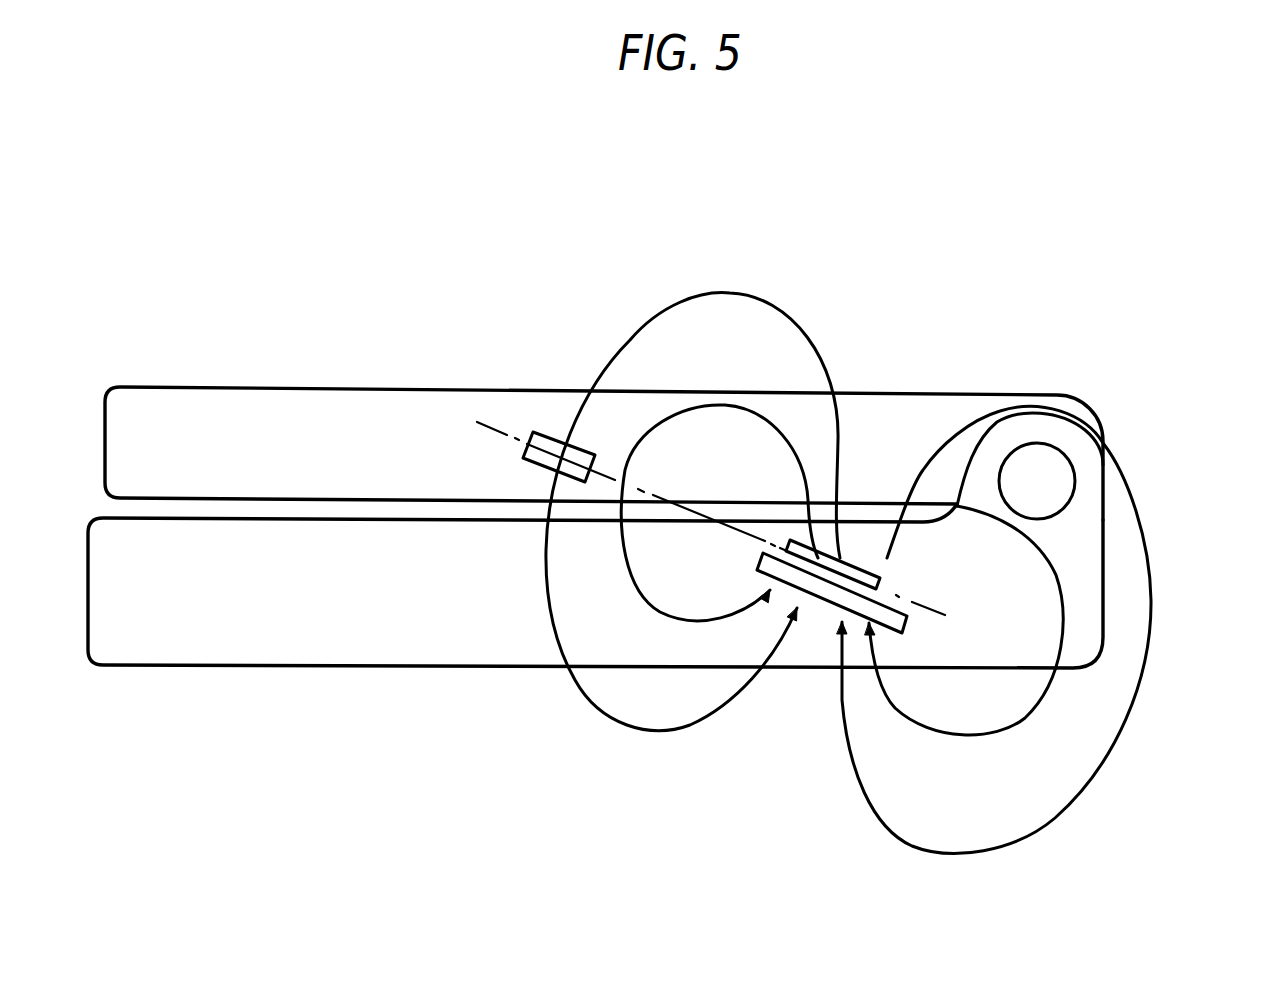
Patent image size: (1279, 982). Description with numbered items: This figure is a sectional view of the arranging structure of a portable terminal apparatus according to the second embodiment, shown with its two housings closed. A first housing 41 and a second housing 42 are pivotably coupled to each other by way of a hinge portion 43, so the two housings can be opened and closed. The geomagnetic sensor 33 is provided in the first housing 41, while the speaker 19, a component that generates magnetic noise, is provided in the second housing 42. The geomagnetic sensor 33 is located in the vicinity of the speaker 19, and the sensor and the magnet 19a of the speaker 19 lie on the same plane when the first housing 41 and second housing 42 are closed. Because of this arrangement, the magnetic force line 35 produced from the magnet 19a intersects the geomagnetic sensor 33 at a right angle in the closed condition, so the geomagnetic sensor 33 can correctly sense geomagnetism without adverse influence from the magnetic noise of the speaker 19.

The speaker 19 is at (908, 626).
The magnet 19a is at (862, 556).
The geomagnetic sensor 33 is at (558, 440).
The magnetic force line 35 is at (683, 293).
The first housing 41 is at (383, 387).
The second housing 42 is at (358, 627).
The hinge portion 43 is at (1055, 483).